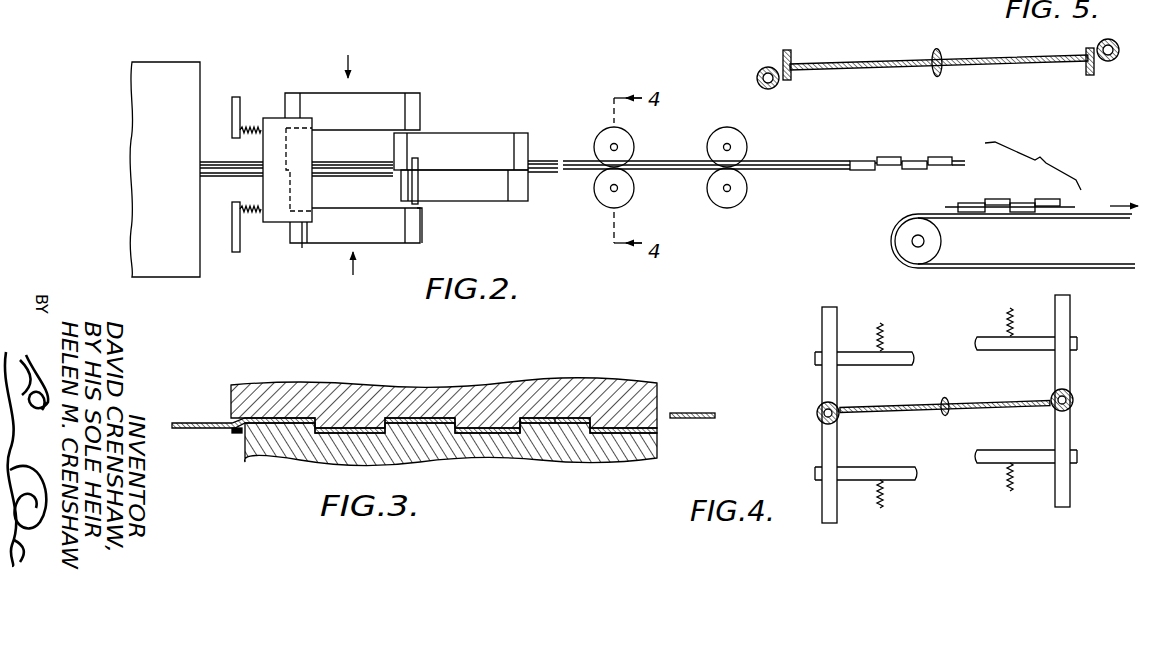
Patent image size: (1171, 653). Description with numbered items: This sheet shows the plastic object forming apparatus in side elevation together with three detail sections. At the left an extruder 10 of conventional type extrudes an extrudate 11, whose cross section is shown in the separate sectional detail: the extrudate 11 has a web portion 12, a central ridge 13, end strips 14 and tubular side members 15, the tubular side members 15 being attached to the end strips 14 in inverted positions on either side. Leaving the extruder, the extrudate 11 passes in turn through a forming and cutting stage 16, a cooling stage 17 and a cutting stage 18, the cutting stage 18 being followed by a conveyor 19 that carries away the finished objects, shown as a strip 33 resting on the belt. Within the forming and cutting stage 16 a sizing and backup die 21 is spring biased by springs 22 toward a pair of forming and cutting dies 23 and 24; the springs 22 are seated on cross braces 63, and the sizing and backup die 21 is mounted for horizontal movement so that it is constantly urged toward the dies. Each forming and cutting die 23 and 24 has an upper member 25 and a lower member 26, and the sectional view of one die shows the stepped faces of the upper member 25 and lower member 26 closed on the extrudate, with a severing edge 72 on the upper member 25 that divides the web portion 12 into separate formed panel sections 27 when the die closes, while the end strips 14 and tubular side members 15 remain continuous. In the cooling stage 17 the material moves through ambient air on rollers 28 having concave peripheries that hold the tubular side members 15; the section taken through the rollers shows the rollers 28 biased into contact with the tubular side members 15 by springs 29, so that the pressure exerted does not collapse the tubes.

In FIG. 2, the extruder 10 is at (145, 118).
In FIG. 2, the extrudate 11 is at (222, 178).
In FIG. 4, the extrudate 11 is at (945, 410).
In FIG. 5, the extrudate 11 is at (939, 57).
In FIG. 4, the web portion 12 is at (870, 405).
In FIG. 5, the web portion 12 is at (855, 62).
In FIG. 4, the central ridge 13 is at (945, 416).
In FIG. 5, the central ridge 13 is at (940, 52).
In FIG. 5, the end strips 14 is at (786, 52).
In FIG. 5, the tubular side members 15 is at (780, 86).
In FIG. 2, the forming and cutting stage 16 is at (406, 161).
In FIG. 3, the forming and cutting stage 16 is at (444, 416).
In FIG. 2, the cooling stage 17 is at (662, 158).
In FIG. 2, the cutting stage 18 is at (868, 150).
In FIG. 2, the conveyor 19 is at (1016, 222).
In FIG. 2, the sizing and backup die 21 is at (275, 117).
In FIG. 2, the springs 22 is at (256, 126).
In FIG. 2, the forming and cutting die 23 is at (365, 92).
In FIG. 2, the forming and cutting die 24 is at (495, 132).
In FIG. 3, the forming and cutting die 24 is at (455, 384).
In FIG. 2, the upper member 25 is at (385, 100).
In FIG. 3, the upper member 25 is at (626, 385).
In FIG. 2, the lower member 26 is at (378, 236).
In FIG. 3, the lower member 26 is at (633, 445).
In FIG. 3, the formed panel sections 27 is at (553, 436).
In FIG. 2, the rollers 28 is at (606, 196).
In FIG. 4, the rollers 28 is at (822, 328).
In FIG. 4, the springs 29 is at (882, 330).
In FIG. 2, the strip on conveyor 33 is at (970, 205).
In FIG. 2, the cross braces 63 is at (236, 97).
In FIG. 3, the severing edge 72 is at (238, 436).